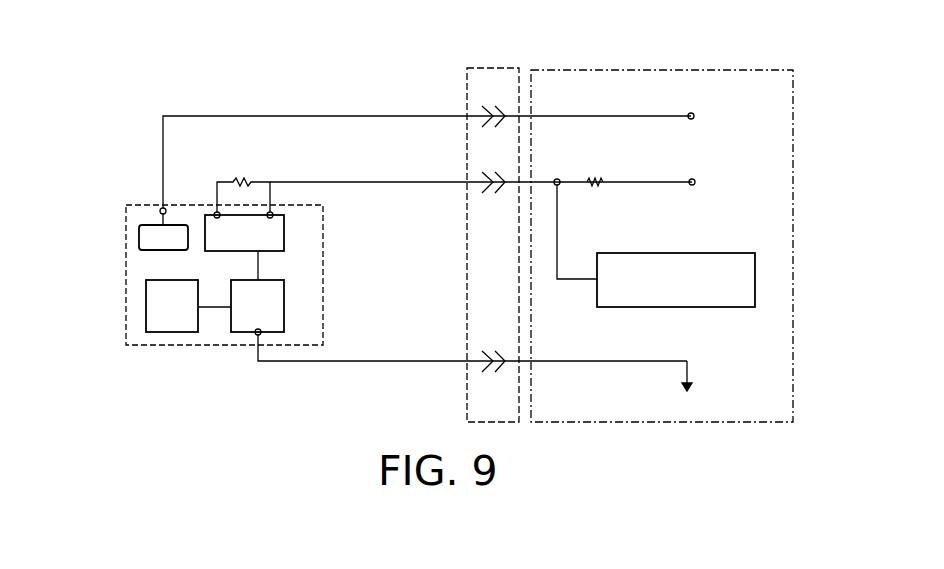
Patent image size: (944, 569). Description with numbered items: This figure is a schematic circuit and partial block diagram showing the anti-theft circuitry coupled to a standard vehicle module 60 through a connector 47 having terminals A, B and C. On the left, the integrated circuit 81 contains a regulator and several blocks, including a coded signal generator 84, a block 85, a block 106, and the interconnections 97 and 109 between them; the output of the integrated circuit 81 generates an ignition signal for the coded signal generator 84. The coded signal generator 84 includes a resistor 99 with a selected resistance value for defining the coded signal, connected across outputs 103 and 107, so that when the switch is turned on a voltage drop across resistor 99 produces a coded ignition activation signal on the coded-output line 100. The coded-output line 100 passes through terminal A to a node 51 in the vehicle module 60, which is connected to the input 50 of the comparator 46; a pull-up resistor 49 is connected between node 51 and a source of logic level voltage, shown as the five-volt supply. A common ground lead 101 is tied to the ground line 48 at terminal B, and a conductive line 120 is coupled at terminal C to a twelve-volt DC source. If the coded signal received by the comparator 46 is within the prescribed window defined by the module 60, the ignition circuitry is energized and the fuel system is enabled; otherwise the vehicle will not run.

The vehicle module 60 is at (648, 70).
The connector 47 is at (465, 97).
The integrated circuit 81 is at (155, 205).
The conductive line 120 is at (370, 114).
The coded-output line 100 is at (310, 180).
The resistor 99 is at (250, 178).
The output 103 is at (215, 212).
The output 107 is at (275, 212).
The coded signal generator 84 is at (273, 229).
The connection line 109 is at (262, 260).
The circuit block 85 is at (172, 295).
The connection line 97 is at (215, 307).
The circuit block 106 is at (270, 292).
The common ground lead 101 is at (357, 363).
The ground line 48 is at (572, 365).
The node 51 is at (557, 179).
The pull-up resistor 49 is at (589, 184).
The input 50 is at (557, 282).
The comparator 46 is at (657, 288).